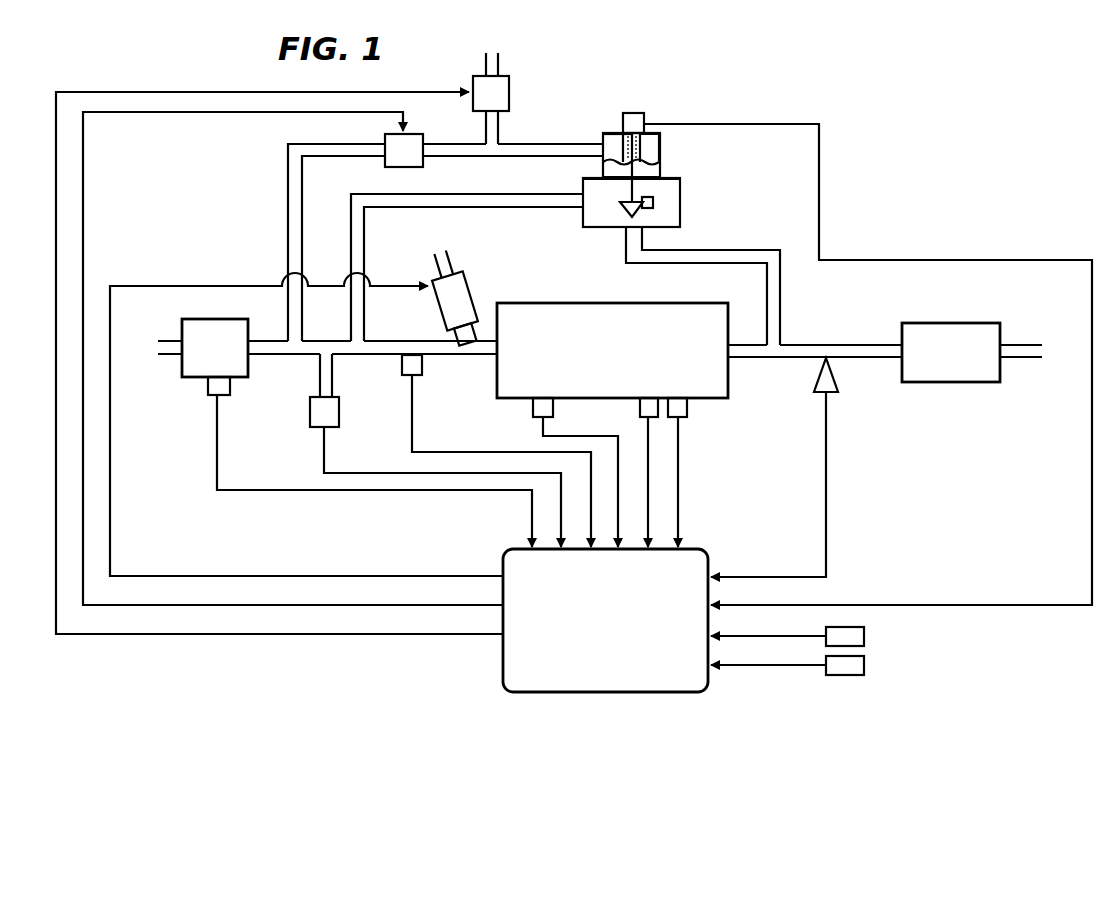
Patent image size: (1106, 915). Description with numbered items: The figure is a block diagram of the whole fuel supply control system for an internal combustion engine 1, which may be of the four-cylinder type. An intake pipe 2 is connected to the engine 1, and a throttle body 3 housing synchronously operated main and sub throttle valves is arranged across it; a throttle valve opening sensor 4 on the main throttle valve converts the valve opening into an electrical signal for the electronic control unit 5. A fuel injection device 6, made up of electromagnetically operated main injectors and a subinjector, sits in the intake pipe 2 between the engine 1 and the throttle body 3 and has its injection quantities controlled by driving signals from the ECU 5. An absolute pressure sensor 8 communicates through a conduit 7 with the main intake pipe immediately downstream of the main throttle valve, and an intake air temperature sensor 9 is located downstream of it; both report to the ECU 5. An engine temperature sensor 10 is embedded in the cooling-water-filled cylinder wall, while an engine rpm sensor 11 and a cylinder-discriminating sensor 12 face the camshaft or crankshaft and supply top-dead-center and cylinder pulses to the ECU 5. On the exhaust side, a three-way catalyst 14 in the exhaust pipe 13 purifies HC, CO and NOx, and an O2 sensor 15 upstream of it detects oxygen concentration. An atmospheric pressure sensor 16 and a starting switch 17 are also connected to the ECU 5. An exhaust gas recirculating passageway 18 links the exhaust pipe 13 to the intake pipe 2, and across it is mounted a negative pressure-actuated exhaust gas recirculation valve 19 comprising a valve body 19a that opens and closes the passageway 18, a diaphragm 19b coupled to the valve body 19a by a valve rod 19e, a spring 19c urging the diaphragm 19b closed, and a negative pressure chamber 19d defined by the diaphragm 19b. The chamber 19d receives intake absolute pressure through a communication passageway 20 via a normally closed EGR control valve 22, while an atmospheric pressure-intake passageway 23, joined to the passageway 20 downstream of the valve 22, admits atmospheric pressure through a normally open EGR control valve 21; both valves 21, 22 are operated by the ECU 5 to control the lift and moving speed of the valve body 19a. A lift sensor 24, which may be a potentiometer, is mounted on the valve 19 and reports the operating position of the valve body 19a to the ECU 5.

The internal combustion engine 1 is at (653, 314).
The intake pipe 2 is at (443, 355).
The throttle body 3 is at (249, 368).
The throttle valve opening sensor 4 is at (231, 388).
The electronic control unit 5 is at (693, 560).
The fuel injection device 6 is at (468, 288).
The conduit 7 is at (333, 384).
The absolute pressure sensor 8 is at (339, 415).
The intake air temperature sensor 9 is at (405, 370).
The engine temperature sensor 10 is at (545, 462).
The engine rpm sensor 11 is at (640, 413).
The cylinder-discriminating sensor 12 is at (689, 413).
The exhaust pipe 13 is at (857, 345).
The three-way catalyst 14 is at (945, 322).
The O2 sensor 15 is at (836, 378).
The atmospheric pressure sensor 16 is at (865, 636).
The starting switch 17 is at (865, 665).
The exhaust gas recirculating passageway 18 is at (508, 193).
The exhaust gas recirculation valve 19 is at (684, 177).
The valve body 19a is at (653, 205).
The diaphragm 19b is at (662, 157).
The spring 19c is at (647, 133).
The negative pressure chamber 19d is at (663, 140).
The valve rod 19e is at (640, 185).
The communication passageway 20 is at (558, 142).
The EGR control valve 21 is at (510, 91).
The EGR control valve 22 is at (425, 137).
The atmospheric pressure-intake passageway 23 is at (502, 128).
The lift sensor 24 is at (633, 113).